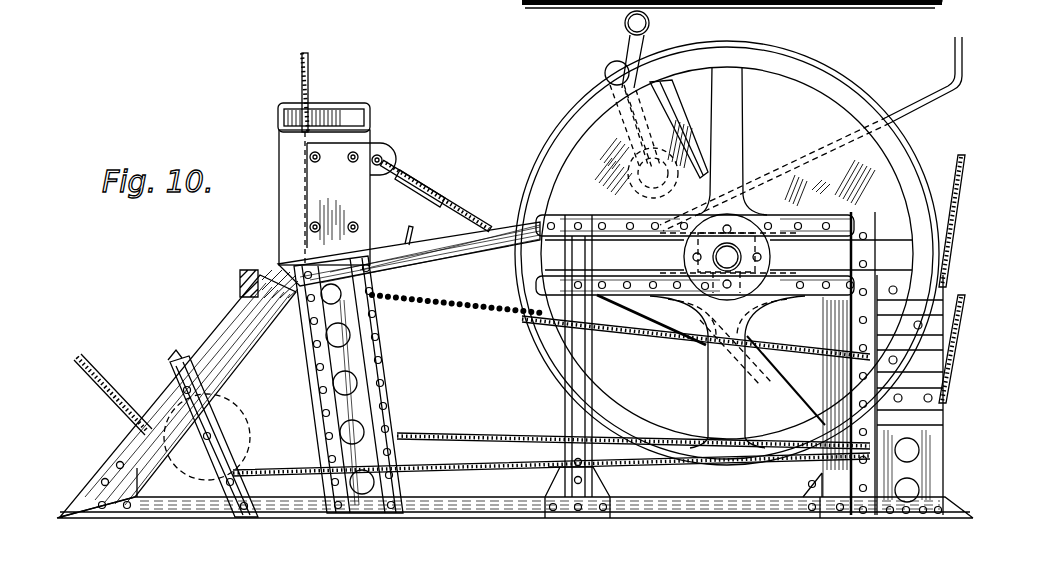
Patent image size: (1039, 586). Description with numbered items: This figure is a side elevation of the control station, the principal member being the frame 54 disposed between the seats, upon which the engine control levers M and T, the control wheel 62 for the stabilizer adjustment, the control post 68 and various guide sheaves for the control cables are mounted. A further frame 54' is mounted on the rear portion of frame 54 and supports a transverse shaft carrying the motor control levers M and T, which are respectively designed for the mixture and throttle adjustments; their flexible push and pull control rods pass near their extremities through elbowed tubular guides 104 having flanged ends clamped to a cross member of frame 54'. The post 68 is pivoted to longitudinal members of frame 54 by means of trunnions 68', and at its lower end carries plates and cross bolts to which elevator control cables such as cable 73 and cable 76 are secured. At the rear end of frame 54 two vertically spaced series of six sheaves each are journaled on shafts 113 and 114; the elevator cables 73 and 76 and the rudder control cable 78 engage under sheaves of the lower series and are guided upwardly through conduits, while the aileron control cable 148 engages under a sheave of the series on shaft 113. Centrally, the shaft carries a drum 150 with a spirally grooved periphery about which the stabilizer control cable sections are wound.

The control post 68 is at (337, 159).
The trunnions 68' is at (179, 393).
The elevator control cable 73 is at (445, 200).
The frame 54 is at (566, 236).
The frame 54' is at (679, 129).
The rudder control cable 78 is at (270, 470).
The elevator control cable 76 is at (518, 436).
The aileron control cable 148 is at (636, 337).
The drum 150 is at (766, 316).
The control wheel 62 is at (903, 153).
The elbowed tubular guide 104 is at (966, 57).
The shaft 113 is at (944, 287).
The shaft 114 is at (945, 398).
The throttle control lever T is at (625, 25).
The mixture control lever M is at (617, 61).